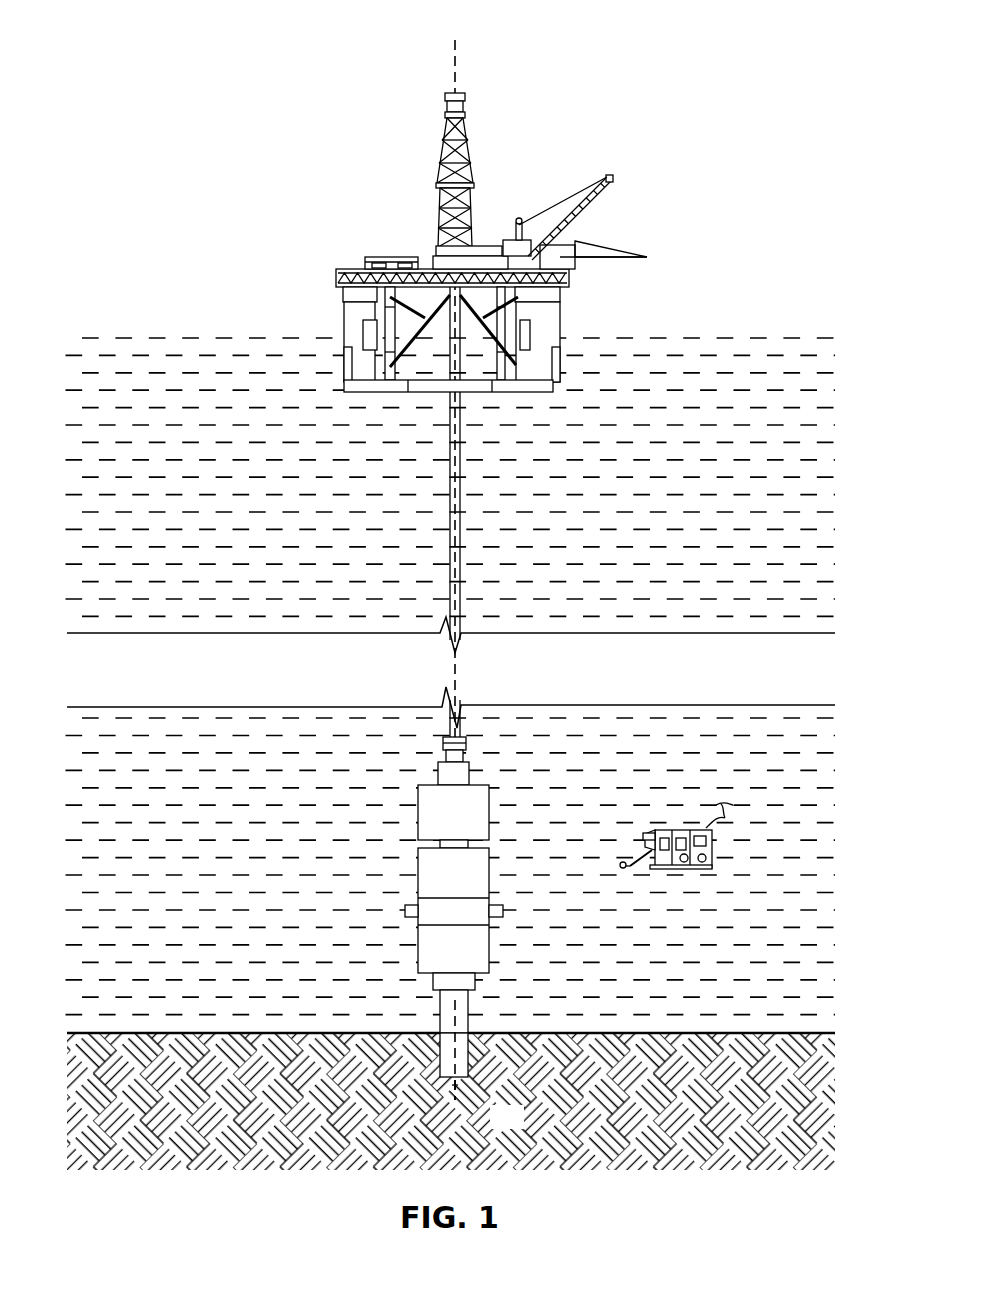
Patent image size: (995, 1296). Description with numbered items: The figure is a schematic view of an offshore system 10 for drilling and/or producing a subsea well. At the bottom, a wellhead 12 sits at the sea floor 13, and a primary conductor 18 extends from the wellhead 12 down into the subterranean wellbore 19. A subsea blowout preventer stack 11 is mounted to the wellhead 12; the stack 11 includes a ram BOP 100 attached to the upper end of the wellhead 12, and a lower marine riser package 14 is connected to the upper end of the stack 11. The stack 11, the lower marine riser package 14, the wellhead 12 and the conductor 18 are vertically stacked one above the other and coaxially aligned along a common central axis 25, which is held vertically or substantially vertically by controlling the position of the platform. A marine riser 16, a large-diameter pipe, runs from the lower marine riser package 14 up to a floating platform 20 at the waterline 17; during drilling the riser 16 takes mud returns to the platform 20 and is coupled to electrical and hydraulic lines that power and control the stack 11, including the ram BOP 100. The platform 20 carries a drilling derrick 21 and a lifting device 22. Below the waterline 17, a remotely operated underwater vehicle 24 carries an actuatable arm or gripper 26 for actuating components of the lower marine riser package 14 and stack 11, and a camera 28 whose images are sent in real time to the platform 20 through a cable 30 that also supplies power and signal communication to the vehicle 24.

The offshore system 10 is at (185, 40).
The subsea blowout preventer stack 11 is at (464, 910).
The wellhead 12 is at (477, 983).
The sea floor 13 is at (752, 1033).
The lower marine riser package 14 is at (489, 813).
The marine riser 16 is at (460, 495).
The waterline 17 is at (658, 338).
The primary conductor 18 is at (450, 1020).
The subterranean wellbore 19 is at (470, 1050).
The floating platform 20 is at (352, 268).
The drilling derrick 21 is at (467, 138).
The lifting device 22 is at (610, 178).
The remotely operated underwater vehicle 24 is at (690, 854).
The central axis 25 is at (457, 1090).
The gripper 26 is at (625, 868).
The camera 28 is at (652, 834).
The cable 30 is at (725, 818).
The ram BOP 100 is at (405, 905).